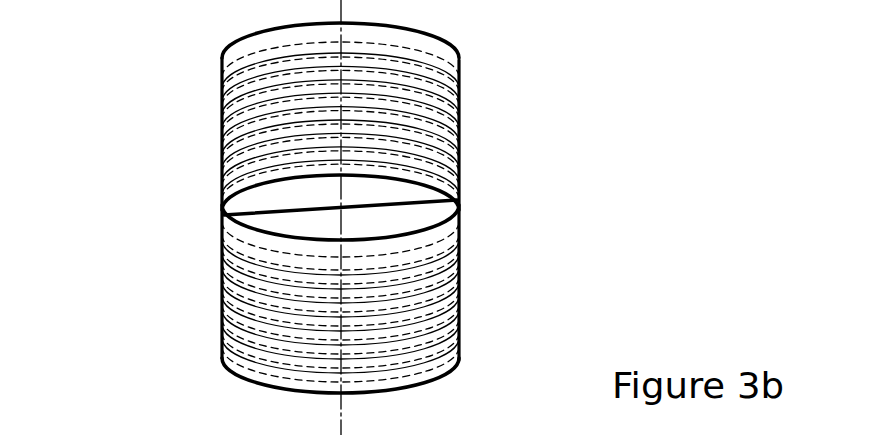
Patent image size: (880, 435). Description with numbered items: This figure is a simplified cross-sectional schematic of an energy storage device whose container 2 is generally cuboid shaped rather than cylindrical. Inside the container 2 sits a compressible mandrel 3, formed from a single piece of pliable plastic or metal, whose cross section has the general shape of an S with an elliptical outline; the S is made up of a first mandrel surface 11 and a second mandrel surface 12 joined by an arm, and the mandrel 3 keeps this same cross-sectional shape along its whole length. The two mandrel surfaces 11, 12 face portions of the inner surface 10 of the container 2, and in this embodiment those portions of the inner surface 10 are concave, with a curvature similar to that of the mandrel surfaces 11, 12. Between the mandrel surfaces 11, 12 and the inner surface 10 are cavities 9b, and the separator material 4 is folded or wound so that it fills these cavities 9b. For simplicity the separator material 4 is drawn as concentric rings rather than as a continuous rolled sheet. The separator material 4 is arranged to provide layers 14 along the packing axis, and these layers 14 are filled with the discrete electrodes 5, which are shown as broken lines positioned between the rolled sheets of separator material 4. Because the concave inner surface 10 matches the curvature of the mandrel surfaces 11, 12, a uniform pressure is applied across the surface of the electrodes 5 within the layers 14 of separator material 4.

The container 2 is at (222, 59).
The compressible mandrel 3 is at (457, 203).
The separator material 4 is at (407, 333).
The discrete electrodes 5 is at (258, 260).
The cavities 9b is at (350, 167).
The inner surface 10 is at (378, 31).
The first mandrel surface 11 is at (300, 174).
The second mandrel surface 12 is at (445, 238).
The layers 14 is at (460, 347).